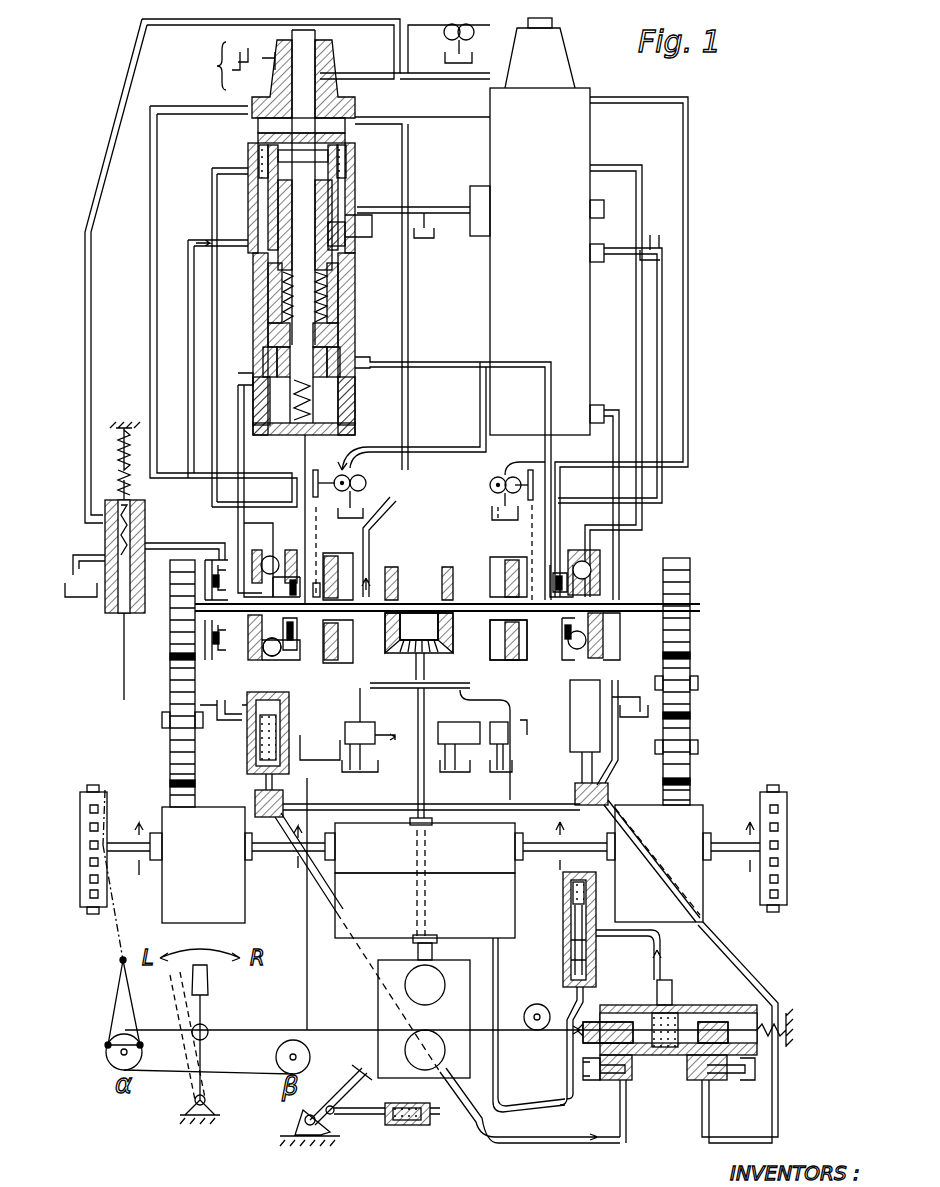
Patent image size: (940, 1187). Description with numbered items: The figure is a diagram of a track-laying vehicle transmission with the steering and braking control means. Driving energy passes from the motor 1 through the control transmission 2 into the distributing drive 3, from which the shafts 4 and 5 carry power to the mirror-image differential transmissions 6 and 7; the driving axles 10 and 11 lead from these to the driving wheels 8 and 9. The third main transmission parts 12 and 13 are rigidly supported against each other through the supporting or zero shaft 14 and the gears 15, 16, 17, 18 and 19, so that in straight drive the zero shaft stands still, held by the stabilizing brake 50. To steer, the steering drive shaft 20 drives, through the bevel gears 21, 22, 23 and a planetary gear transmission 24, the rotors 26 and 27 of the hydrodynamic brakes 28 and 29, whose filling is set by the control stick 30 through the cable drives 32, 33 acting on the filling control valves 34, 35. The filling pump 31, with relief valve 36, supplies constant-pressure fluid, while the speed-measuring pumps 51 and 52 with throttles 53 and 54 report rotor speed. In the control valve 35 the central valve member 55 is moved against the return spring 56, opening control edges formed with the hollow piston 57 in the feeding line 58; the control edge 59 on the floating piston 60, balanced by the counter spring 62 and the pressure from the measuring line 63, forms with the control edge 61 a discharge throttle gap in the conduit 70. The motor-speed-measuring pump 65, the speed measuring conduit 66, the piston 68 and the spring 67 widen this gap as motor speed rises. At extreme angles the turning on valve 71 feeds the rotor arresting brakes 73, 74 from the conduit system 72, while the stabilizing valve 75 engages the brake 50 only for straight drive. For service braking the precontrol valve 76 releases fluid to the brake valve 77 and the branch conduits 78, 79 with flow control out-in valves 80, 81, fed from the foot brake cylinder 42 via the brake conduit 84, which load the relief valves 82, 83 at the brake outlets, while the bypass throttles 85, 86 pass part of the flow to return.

The motor 1 is at (460, 1054).
The control transmission 2 is at (460, 922).
The distributing drive 3 is at (458, 862).
The shaft 4 is at (575, 850).
The shaft 5 is at (270, 857).
The differential transmission 6 is at (659, 863).
The differential transmission 7 is at (204, 872).
The driving wheel 8 is at (762, 880).
The driving wheel 9 is at (125, 905).
The driving axle 10 is at (702, 840).
The driving axle 11 is at (126, 819).
The third main transmission part 12 is at (696, 781).
The third main transmission part 13 is at (195, 793).
The supporting or zero shaft 14 is at (405, 602).
The gear 15 is at (696, 721).
The gear 16 is at (696, 663).
The gear 17 is at (696, 620).
The gear 18 is at (184, 738).
The gear 19 is at (178, 633).
The steering drive shaft 20 is at (418, 720).
The bevel gear 21 is at (395, 650).
The bevel gear 22 is at (446, 636).
The bevel gear 23 is at (398, 568).
The spur gear planetary gear transmission 24 is at (518, 662).
The rotor 26 is at (598, 566).
The rotor 27 is at (268, 560).
The hydrodynamic brake 28 is at (584, 660).
The hydrodynamic brake 29 is at (275, 657).
The control stick 30 is at (208, 1018).
The filling pump 31 is at (448, 724).
The cable drive 32 is at (548, 970).
The cable drive 33 is at (307, 1012).
The filling control valve 34 is at (596, 327).
The control valve 35 is at (282, 232).
The relief valve 36 is at (497, 745).
The foot brake cylinder 42 is at (436, 1118).
The stabilizing brake 50 is at (229, 665).
The speed-measuring pump 51 is at (388, 480).
The speed-measuring pump 52 is at (506, 474).
The throttle 53 is at (371, 543).
The throttle 54 is at (498, 507).
The central valve member 55 is at (312, 300).
The return spring 56 is at (330, 410).
The hollow piston 57 is at (268, 330).
The feeding line 58 is at (440, 365).
The control edge 59 is at (278, 198).
The floating piston 60 is at (290, 186).
The control edge 61 is at (338, 228).
The counter spring 62 is at (270, 303).
The measuring line 63 is at (212, 348).
The motor-speed-measuring pump 65 is at (392, 745).
The speed measuring conduit 66 is at (422, 125).
The spring 67 is at (259, 156).
The piston 68 is at (275, 136).
The conduit 70 is at (428, 208).
The turning on valve 71 is at (590, 63).
The conduit system 72 is at (90, 272).
The brake rotor arresting brake 73 is at (336, 664).
The brake rotor arresting brake 74 is at (546, 560).
The stabilizing valve 75 is at (154, 519).
The precontrol valve 76 is at (600, 964).
The brake valve 77 is at (693, 976).
The branch conduit 78 is at (618, 743).
The branch conduit 79 is at (247, 750).
The flow control out-in valve 80 is at (637, 840).
The flow control out-in valve 81 is at (285, 797).
The relief valve 82 is at (585, 731).
The relief valve 83 is at (293, 750).
The brake conduit 84 is at (500, 952).
The bypass throttle 85 is at (245, 692).
The bypass throttle 86 is at (604, 660).